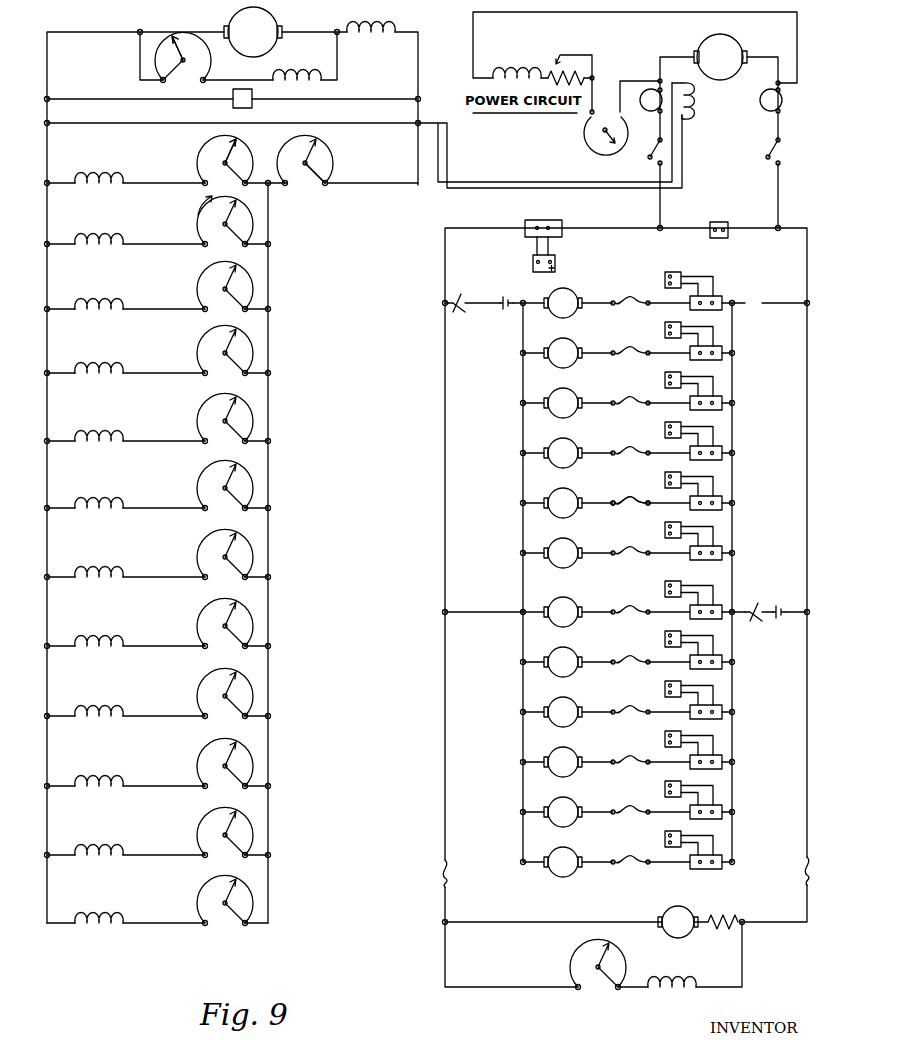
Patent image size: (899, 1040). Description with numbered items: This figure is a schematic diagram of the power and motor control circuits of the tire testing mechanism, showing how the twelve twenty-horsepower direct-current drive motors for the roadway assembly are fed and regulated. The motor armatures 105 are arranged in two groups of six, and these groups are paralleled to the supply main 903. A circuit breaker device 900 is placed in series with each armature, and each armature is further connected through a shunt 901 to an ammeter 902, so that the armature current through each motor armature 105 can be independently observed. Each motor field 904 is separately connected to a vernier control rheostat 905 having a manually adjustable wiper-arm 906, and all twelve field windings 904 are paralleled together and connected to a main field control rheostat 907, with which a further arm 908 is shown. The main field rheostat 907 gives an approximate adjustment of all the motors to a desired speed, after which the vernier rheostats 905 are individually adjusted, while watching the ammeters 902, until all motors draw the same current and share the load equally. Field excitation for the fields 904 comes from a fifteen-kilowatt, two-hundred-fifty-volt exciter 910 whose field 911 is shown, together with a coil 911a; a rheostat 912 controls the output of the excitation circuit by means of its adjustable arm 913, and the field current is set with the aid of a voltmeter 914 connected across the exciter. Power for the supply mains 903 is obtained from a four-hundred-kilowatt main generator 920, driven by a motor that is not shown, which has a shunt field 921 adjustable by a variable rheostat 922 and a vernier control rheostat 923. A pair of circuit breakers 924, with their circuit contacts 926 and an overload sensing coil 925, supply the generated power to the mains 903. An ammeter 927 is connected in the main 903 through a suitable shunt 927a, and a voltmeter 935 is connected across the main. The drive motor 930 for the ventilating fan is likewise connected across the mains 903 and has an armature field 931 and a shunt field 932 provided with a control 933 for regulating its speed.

The motor armature 105 is at (572, 294).
The circuit breaker device 900 is at (617, 298).
The shunt 901 is at (722, 302).
The ammeter 902 is at (680, 272).
The supply main 903 is at (662, 205).
The motor field 904 is at (100, 173).
The vernier control rheostat 905 is at (207, 156).
The manually adjustable wiper-arm 906 is at (238, 143).
The main field control rheostat 907 is at (333, 152).
The pointer 908 is at (328, 171).
The exciter 910 is at (279, 21).
The exciter field 911 is at (365, 31).
The coil 911a is at (285, 73).
The rheostat 912 is at (212, 62).
The adjustable arm 913 is at (191, 78).
The voltmeter 914 is at (252, 108).
The main generator 920 is at (733, 38).
The shunt field 921 is at (513, 68).
The variable rheostat 922 is at (576, 66).
The vernier control rheostat 923 is at (584, 148).
The circuit breaker 924 is at (646, 112).
The overload sensing coil 925 is at (698, 98).
The circuit contacts 926 is at (778, 152).
The ammeter 927 is at (555, 262).
The shunt 927a is at (562, 224).
The fan drive motor 930 is at (672, 907).
The armature field 931 is at (711, 916).
The shunt field 932 is at (679, 978).
The control 933 is at (603, 987).
The voltmeter 935 is at (726, 221).